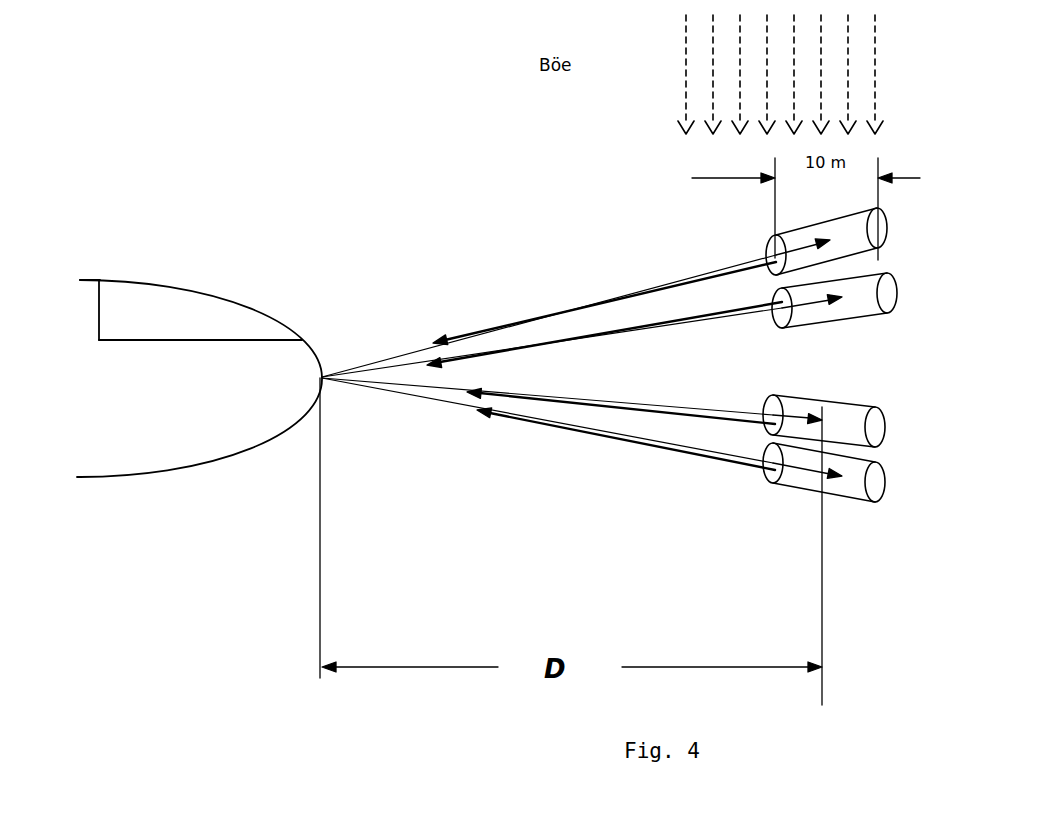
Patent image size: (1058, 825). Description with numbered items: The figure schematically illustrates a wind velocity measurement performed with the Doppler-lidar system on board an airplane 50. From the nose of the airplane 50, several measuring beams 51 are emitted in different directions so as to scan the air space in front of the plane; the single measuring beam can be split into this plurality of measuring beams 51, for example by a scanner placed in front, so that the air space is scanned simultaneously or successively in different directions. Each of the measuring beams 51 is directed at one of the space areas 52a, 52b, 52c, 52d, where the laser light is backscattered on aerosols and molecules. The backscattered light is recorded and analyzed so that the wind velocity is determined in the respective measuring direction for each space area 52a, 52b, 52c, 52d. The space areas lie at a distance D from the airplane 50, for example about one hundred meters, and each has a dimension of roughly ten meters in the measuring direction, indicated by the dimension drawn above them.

The airplane 50 is at (197, 440).
The measuring beams 51 is at (565, 305).
The space area 52a is at (775, 250).
The space area 52b is at (802, 316).
The space area 52c is at (848, 416).
The space area 52d is at (850, 488).